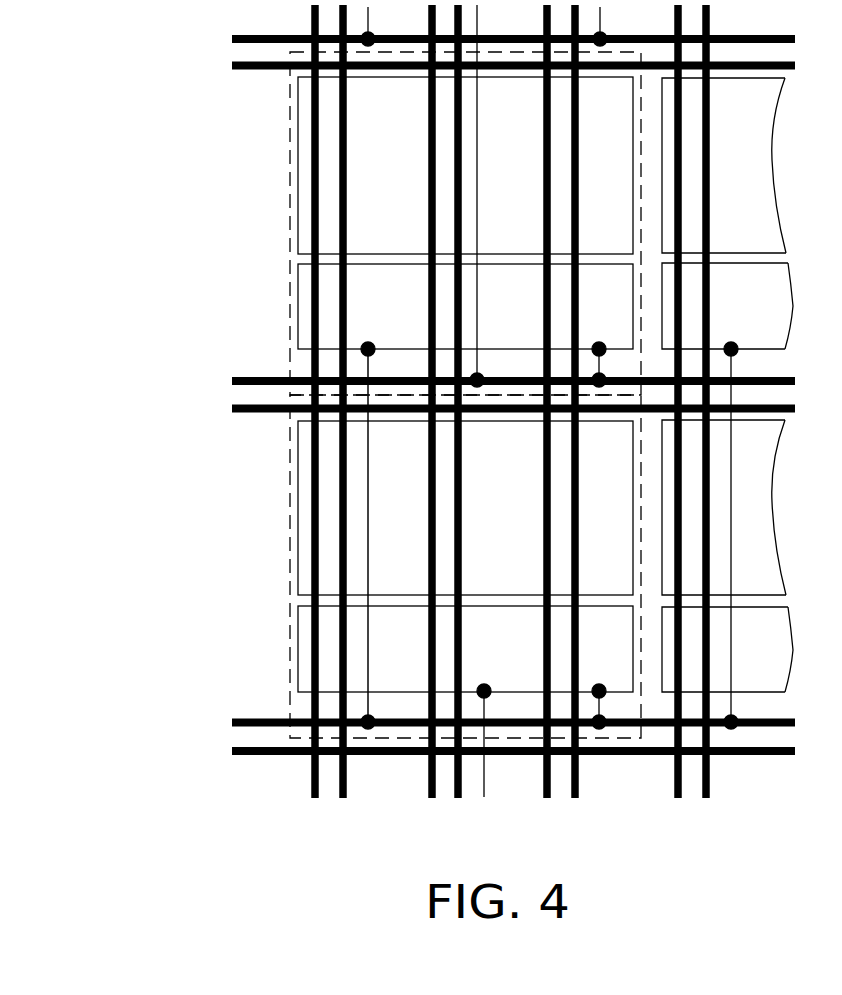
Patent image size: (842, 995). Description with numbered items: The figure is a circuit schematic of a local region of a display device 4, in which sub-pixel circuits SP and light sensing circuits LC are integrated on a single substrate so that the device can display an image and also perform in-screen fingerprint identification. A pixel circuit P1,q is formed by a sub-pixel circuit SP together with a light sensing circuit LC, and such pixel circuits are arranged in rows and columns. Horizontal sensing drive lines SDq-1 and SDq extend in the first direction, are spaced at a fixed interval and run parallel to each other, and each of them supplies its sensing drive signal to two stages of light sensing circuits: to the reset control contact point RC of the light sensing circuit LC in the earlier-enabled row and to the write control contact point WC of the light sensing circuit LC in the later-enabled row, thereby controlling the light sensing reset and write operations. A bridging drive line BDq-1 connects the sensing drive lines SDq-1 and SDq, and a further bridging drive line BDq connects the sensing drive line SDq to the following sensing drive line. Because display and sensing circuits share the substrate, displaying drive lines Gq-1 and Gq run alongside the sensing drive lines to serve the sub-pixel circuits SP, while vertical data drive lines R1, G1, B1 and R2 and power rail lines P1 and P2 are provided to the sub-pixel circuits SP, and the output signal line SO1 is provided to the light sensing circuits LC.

The display device 4 is at (59, 44).
The sensing drive line SDq-1 is at (473, 38).
The displaying drive line Gq-1 is at (480, 64).
The sensing drive line SDq is at (486, 377).
The displaying drive line Gq is at (493, 411).
The pixel circuit P1,q is at (287, 150).
The sub-pixel circuit SP is at (298, 201).
The light sensing circuit LC is at (298, 303).
The reset control contact point RC is at (548, 550).
The write control contact point WC is at (599, 516).
The bridging drive line BDq-1 is at (477, 170).
The bridging drive line BDq is at (368, 552).
The data drive line R1 is at (313, 422).
The power rail line P1 is at (531, 422).
The data drive line G1 is at (427, 422).
The output signal line SO1 is at (464, 422).
The data drive line B1 is at (546, 422).
The power rail line P2 is at (583, 422).
The data drive line R2 is at (677, 422).